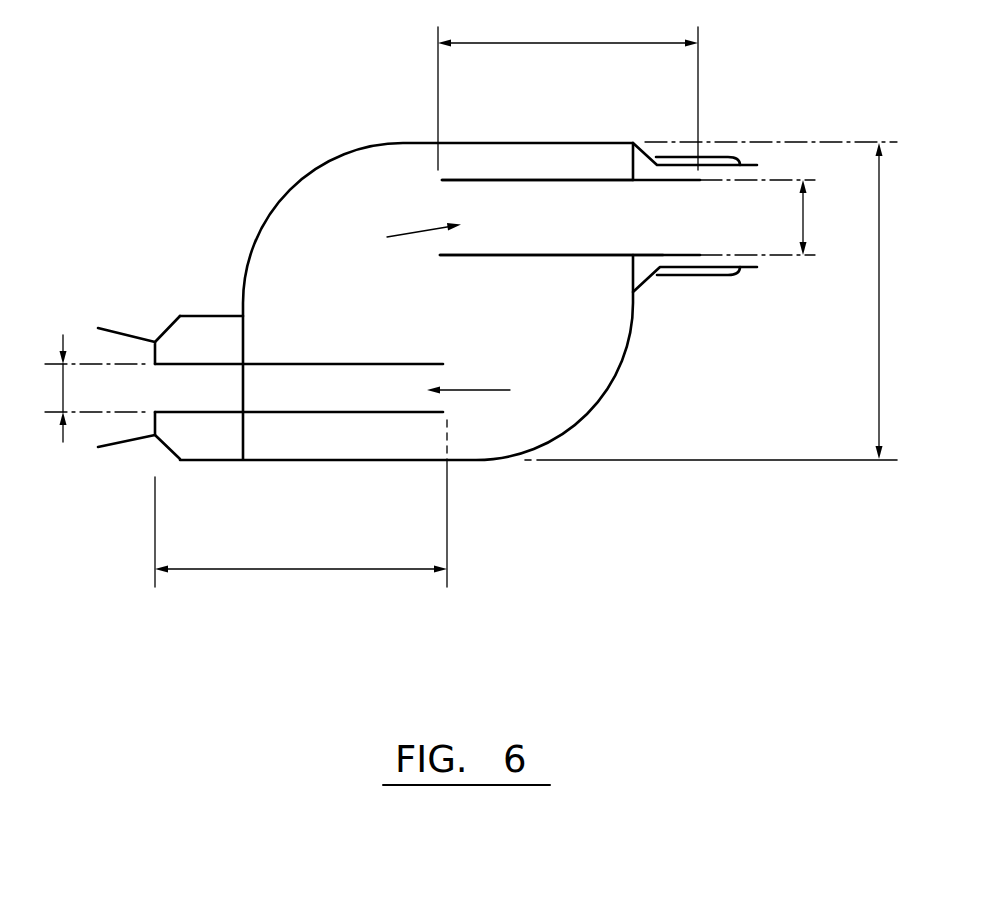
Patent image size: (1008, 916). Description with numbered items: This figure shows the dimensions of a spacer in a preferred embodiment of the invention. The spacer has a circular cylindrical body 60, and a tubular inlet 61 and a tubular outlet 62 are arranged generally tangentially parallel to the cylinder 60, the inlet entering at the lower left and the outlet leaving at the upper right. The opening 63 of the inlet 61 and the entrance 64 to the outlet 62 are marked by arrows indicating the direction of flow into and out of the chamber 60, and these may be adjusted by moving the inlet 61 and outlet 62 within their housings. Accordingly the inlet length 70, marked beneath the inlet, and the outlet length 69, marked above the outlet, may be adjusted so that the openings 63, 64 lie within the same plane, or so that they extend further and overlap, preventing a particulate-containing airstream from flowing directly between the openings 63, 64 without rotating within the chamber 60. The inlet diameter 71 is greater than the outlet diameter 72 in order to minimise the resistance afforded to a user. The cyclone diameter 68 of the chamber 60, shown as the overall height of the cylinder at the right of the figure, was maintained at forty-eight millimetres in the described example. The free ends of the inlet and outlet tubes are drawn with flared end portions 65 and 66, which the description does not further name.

The circular cylindrical body 60 is at (300, 182).
The tubular inlet 61 is at (346, 363).
The tubular outlet 62 is at (552, 258).
The opening of the inlet 63 is at (486, 390).
The entrance to the outlet 64 is at (403, 239).
The flared inlet end 65 is at (121, 333).
The flared outlet lip 66 is at (737, 267).
The cyclone diameter 68 is at (897, 301).
The outlet length 69 is at (568, 89).
The inlet length 70 is at (301, 503).
The inlet diameter 71 is at (47, 388).
The outlet diameter 72 is at (821, 217).